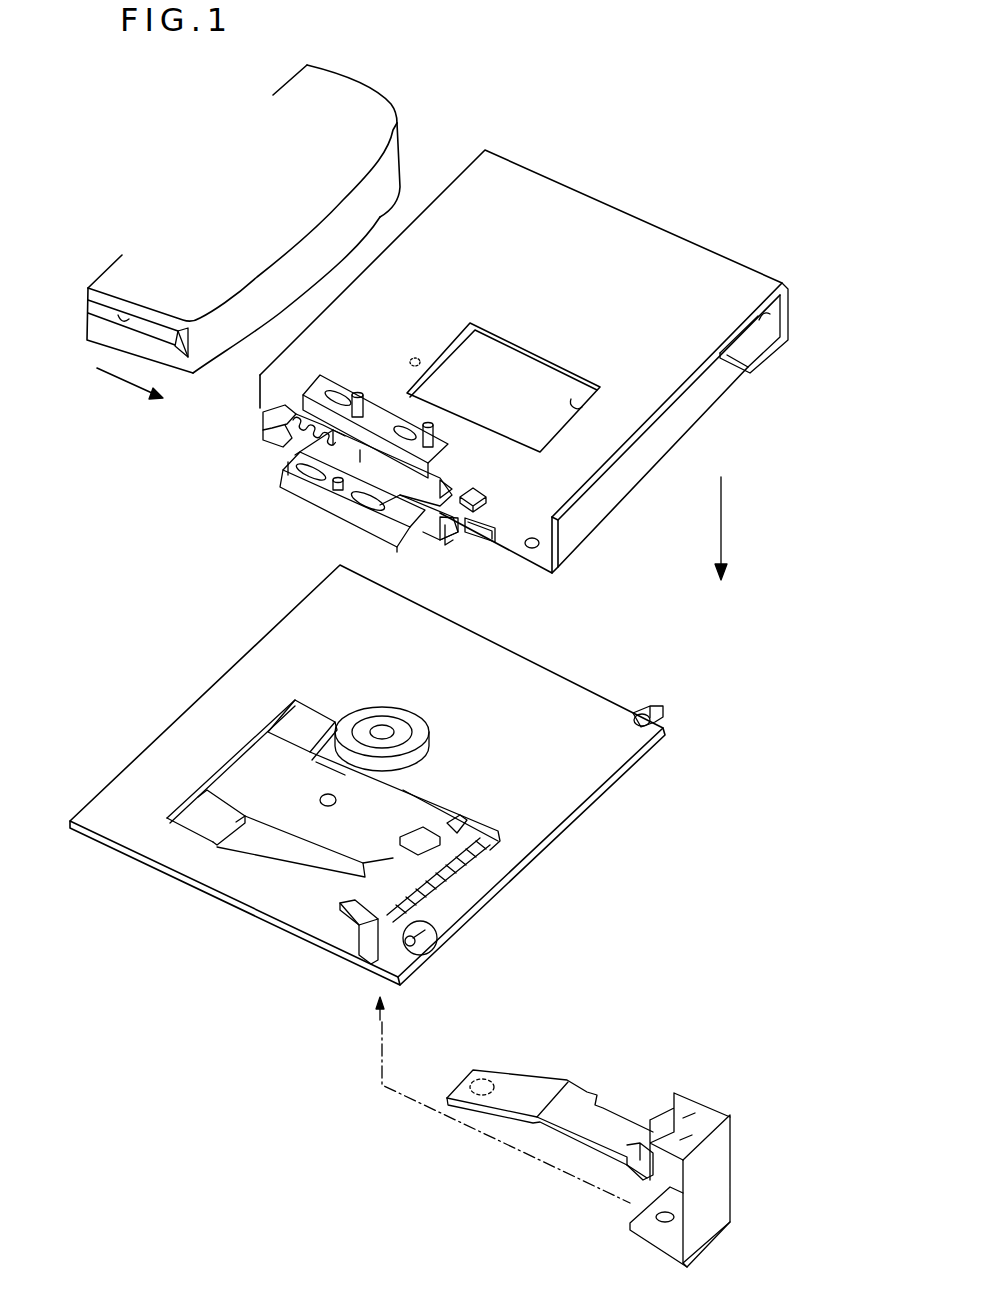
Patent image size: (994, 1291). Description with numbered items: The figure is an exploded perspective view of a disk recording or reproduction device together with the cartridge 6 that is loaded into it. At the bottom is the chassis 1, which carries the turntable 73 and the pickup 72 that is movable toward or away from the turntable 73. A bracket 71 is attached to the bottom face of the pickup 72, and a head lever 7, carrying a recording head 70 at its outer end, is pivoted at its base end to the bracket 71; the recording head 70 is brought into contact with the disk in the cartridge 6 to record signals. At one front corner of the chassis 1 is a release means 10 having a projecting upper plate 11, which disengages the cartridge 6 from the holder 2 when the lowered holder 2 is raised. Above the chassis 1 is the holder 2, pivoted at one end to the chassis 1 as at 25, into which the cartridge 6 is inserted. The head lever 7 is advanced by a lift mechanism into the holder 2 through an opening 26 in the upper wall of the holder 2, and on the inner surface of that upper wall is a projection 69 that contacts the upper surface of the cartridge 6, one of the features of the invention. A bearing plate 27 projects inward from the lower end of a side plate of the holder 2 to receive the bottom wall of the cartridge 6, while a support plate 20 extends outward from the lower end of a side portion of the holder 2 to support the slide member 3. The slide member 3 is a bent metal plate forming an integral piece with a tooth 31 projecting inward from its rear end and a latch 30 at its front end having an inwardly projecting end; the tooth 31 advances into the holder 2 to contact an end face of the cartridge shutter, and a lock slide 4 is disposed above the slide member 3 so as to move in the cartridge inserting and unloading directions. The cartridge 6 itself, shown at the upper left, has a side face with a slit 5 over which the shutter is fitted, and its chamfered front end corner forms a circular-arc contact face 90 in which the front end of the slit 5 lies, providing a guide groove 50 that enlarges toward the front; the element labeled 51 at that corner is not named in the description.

The chassis 1 is at (576, 782).
The holder 2 is at (592, 230).
The slide member 3 is at (403, 530).
The lock slide 4 is at (377, 417).
The slit 5 is at (244, 212).
The cartridge 6 is at (357, 98).
The head lever 7 is at (578, 1102).
The release means 10 is at (393, 967).
The projecting upper plate 11 is at (360, 912).
The support plate 20 is at (312, 502).
The pivot 25 is at (773, 312).
The opening 26 is at (578, 406).
The bearing plate 27 is at (757, 348).
The latch 30 is at (453, 534).
The tooth 31 is at (267, 437).
The guide groove 50 is at (178, 330).
The recess 51 is at (125, 316).
The projection 69 is at (418, 356).
The recording head 70 is at (500, 1068).
The bracket 71 is at (718, 1153).
The pickup 72 is at (322, 794).
The turntable 73 is at (390, 713).
The contact face 90 is at (188, 372).